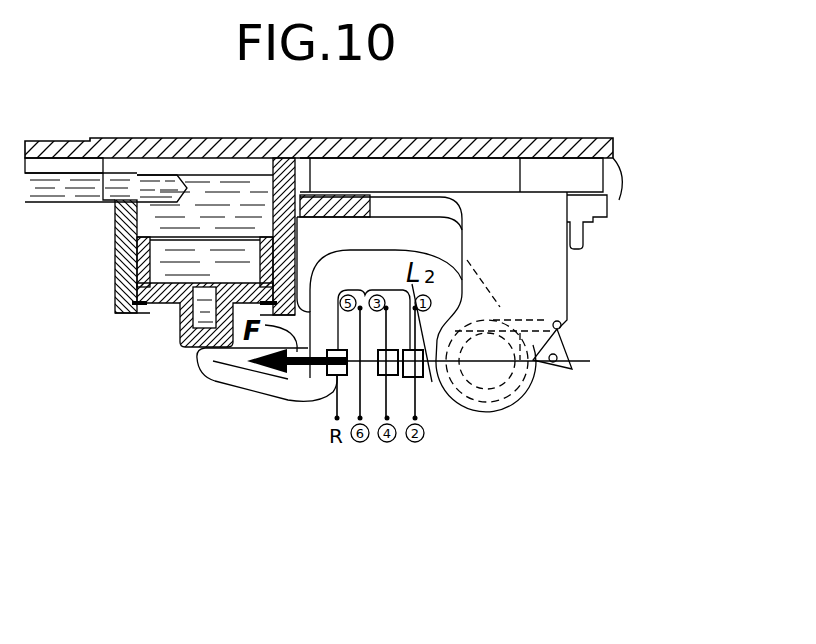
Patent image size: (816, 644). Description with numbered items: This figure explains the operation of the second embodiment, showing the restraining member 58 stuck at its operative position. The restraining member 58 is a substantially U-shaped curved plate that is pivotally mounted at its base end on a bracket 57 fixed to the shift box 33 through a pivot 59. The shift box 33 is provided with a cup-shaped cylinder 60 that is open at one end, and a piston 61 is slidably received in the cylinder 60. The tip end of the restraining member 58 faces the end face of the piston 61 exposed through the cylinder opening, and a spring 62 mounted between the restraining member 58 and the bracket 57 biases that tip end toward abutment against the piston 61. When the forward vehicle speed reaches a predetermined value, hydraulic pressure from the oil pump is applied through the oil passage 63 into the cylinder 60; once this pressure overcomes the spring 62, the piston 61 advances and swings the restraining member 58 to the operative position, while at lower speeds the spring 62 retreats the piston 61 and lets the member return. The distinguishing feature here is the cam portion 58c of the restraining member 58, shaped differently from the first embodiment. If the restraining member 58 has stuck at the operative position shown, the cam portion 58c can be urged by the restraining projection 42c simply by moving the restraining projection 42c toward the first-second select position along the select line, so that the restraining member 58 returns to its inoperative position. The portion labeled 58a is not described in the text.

The shift box 33 is at (418, 200).
The bracket 57 is at (560, 284).
The restraining member 58 is at (247, 393).
The gate block 58a is at (347, 377).
The cam portion 58c is at (403, 336).
The pivot 59 is at (505, 405).
The cylinder 60 is at (115, 290).
The piston 61 is at (182, 338).
The spring 62 is at (561, 323).
The oil passage 63 is at (52, 192).
The restraining projection 42c is at (407, 377).